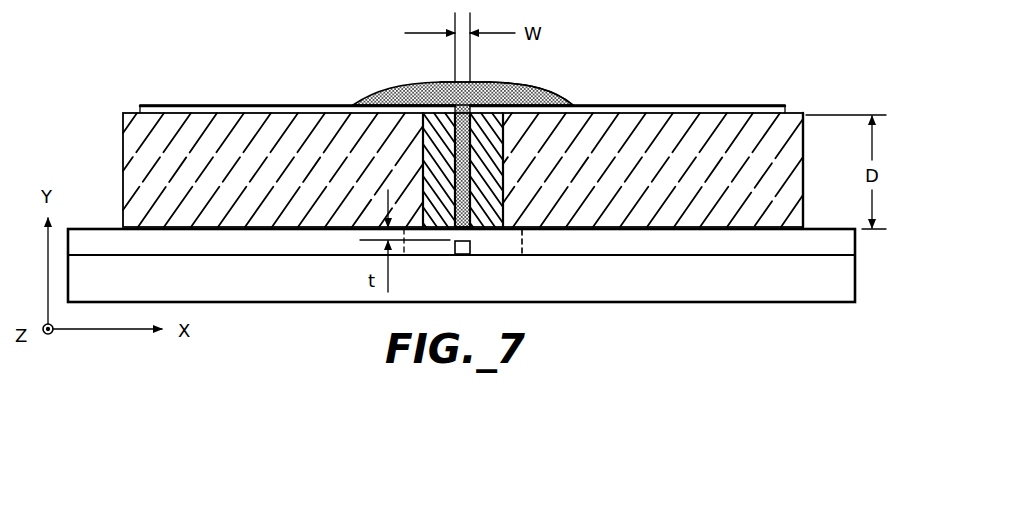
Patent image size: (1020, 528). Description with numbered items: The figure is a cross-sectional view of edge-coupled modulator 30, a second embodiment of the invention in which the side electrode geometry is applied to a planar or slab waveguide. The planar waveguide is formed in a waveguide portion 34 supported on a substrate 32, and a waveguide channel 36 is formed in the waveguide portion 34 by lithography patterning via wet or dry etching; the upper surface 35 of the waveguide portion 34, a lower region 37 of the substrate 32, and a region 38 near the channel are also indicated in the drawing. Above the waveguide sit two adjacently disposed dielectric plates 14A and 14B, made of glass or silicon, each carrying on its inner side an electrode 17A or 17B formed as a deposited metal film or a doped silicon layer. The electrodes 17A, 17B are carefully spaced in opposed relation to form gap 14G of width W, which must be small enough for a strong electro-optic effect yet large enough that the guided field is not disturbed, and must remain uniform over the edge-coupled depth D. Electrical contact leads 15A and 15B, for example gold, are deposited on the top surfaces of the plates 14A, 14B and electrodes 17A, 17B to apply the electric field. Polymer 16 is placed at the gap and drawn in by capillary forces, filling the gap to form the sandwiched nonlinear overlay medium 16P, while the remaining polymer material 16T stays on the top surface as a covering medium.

The dielectric plate 14A is at (132, 137).
The dielectric plate 14B is at (790, 130).
The gap 14G is at (483, 229).
The electrical contact lead 15A is at (302, 106).
The electrical contact lead 15B is at (728, 106).
The polymer 16 is at (430, 79).
The nonlinear overlay medium 16P is at (465, 106).
The remaining polymer material 16T is at (512, 92).
The electrode 17A is at (425, 143).
The electrode 17B is at (497, 143).
The edge-coupled modulator 30 is at (654, 58).
The substrate 32 is at (828, 277).
The waveguide portion 34 is at (825, 239).
The top surface 35 is at (807, 228).
The waveguide channel 36 is at (452, 246).
The lower layer 37 is at (702, 258).
The region 38 is at (522, 231).